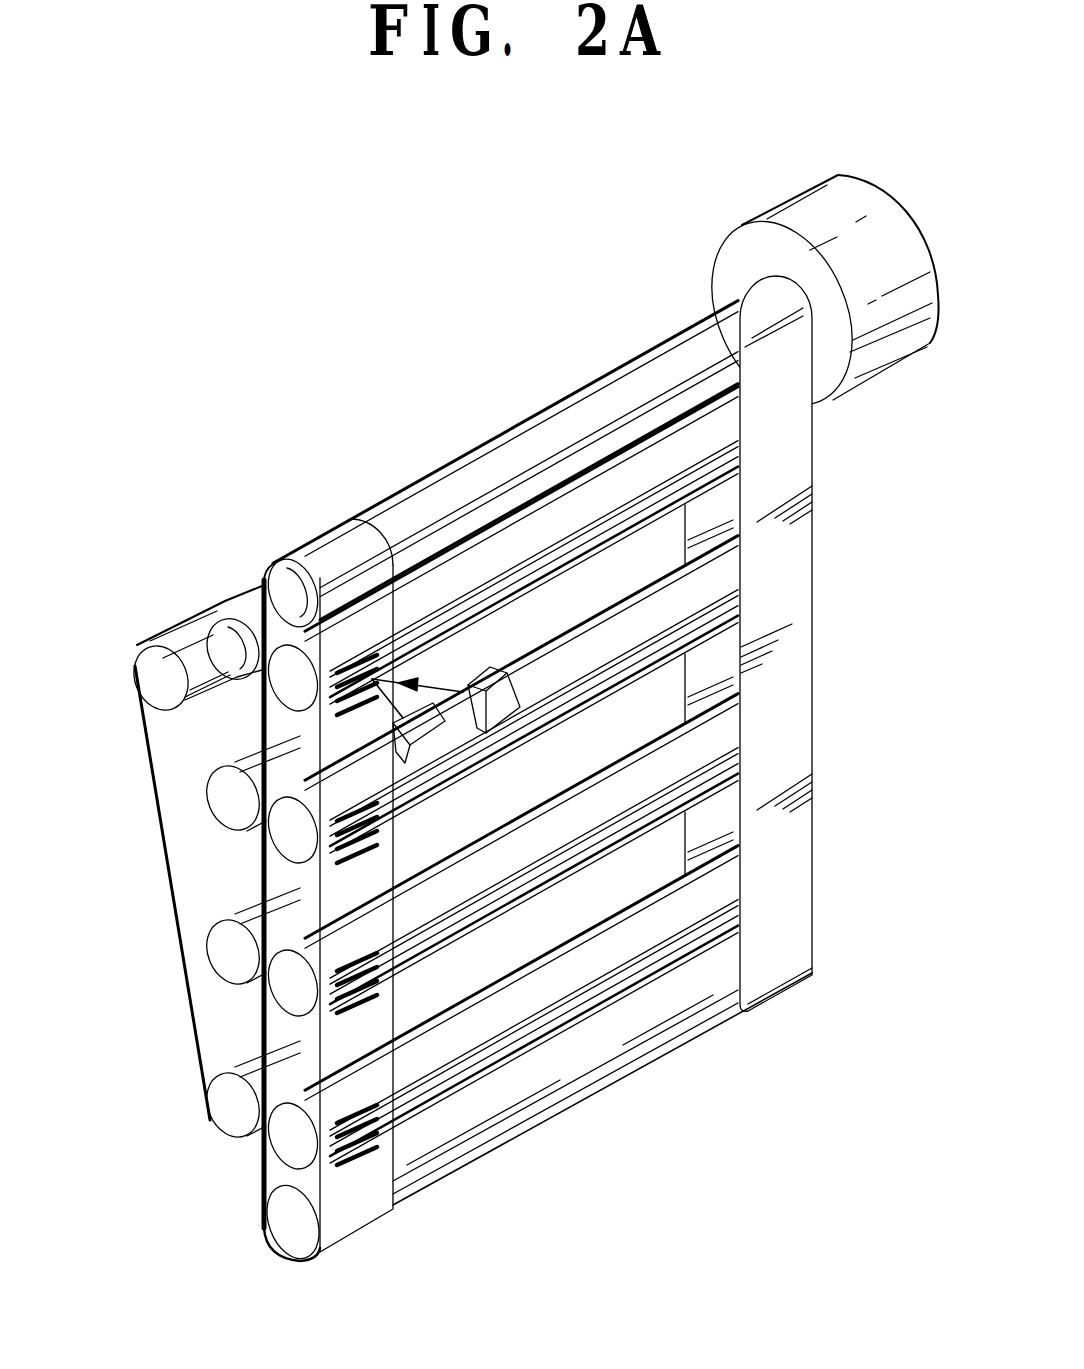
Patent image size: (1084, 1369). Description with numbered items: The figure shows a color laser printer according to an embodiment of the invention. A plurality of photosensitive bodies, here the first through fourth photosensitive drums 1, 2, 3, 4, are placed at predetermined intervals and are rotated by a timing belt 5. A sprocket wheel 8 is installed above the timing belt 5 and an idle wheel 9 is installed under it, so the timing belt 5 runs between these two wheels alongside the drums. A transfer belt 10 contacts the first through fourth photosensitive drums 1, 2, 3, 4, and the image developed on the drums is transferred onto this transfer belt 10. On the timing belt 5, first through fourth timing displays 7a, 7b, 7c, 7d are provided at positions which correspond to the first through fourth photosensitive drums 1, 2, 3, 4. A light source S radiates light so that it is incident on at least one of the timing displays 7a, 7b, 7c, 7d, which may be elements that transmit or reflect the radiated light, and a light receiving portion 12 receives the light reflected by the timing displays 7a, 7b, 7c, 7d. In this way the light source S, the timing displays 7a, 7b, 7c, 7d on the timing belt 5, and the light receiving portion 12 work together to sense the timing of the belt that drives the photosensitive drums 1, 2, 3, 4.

The first photosensitive drum 1 is at (280, 683).
The second photosensitive drum 2 is at (280, 833).
The third photosensitive drum 3 is at (280, 993).
The fourth photosensitive drum 4 is at (283, 1143).
The timing belt 5 is at (273, 1178).
The first timing display 7a is at (375, 662).
The second timing display 7b is at (372, 824).
The third timing display 7c is at (372, 974).
The fourth timing display 7d is at (353, 1162).
The sprocket wheel 8 is at (290, 583).
The idle wheel 9 is at (290, 1240).
The transfer belt 10 is at (160, 805).
The light receiving portion 12 is at (430, 747).
The light source S is at (500, 722).